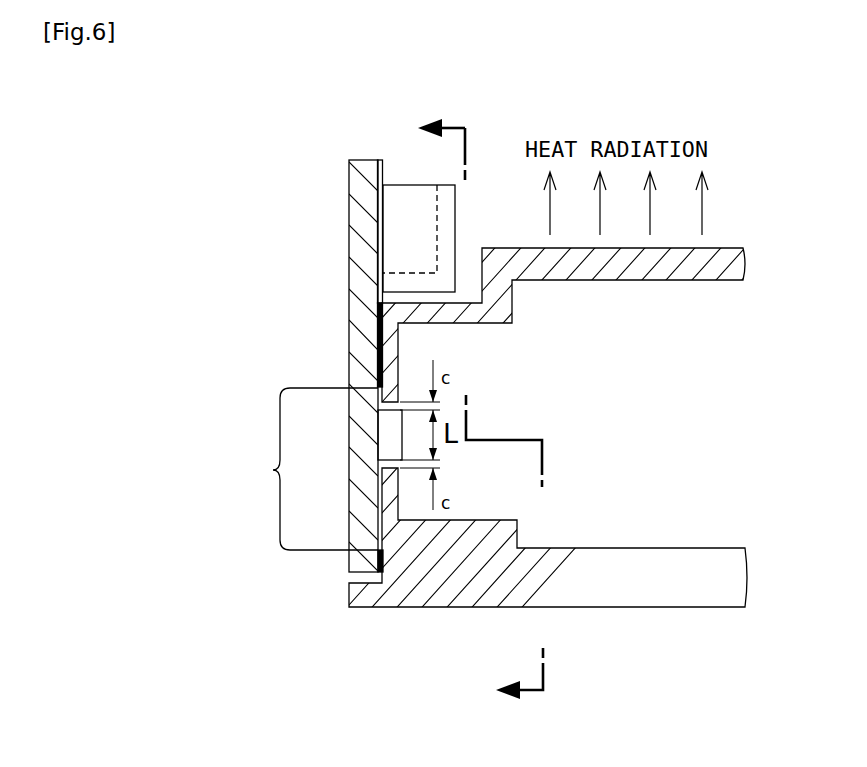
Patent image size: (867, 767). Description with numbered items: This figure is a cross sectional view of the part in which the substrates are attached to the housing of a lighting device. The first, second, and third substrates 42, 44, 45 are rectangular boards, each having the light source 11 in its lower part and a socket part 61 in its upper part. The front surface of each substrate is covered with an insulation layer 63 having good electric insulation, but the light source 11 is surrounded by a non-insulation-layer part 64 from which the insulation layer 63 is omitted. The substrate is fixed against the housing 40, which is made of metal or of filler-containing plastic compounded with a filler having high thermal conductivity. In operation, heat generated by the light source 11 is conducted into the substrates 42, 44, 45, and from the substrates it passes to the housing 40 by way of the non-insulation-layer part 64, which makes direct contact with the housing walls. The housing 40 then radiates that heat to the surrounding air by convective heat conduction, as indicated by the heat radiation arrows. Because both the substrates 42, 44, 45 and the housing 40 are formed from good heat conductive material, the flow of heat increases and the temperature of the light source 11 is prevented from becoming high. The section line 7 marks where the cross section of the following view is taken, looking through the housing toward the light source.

The first substrate 42 is at (269, 336).
The second substrate 44 is at (269, 336).
The third substrate 45 is at (346, 158).
The insulation layer 63 is at (383, 175).
The socket part 61 is at (427, 230).
The housing 40 is at (513, 603).
The light source 11 is at (388, 432).
The non-insulation-layer part 64 is at (273, 470).
The line 7- 7 is at (485, 414).